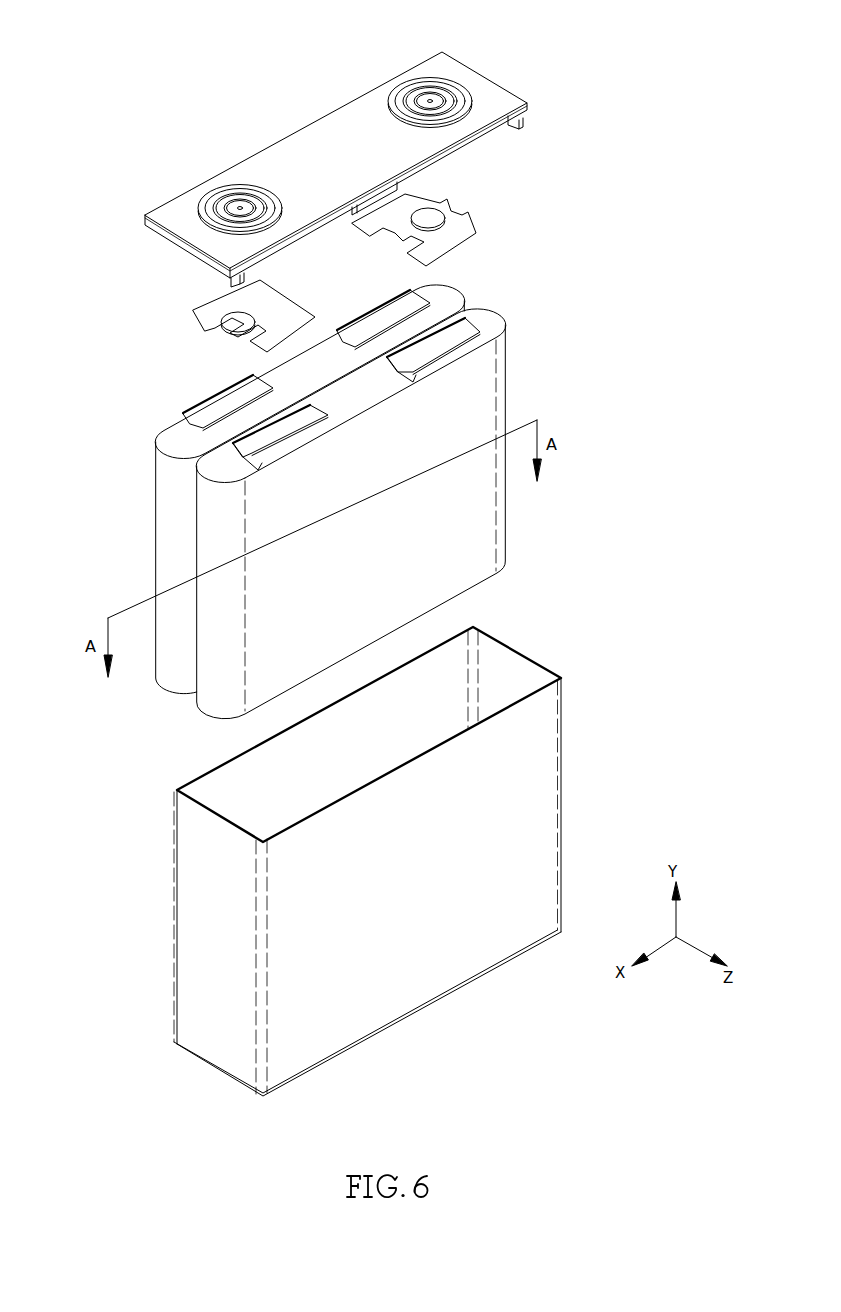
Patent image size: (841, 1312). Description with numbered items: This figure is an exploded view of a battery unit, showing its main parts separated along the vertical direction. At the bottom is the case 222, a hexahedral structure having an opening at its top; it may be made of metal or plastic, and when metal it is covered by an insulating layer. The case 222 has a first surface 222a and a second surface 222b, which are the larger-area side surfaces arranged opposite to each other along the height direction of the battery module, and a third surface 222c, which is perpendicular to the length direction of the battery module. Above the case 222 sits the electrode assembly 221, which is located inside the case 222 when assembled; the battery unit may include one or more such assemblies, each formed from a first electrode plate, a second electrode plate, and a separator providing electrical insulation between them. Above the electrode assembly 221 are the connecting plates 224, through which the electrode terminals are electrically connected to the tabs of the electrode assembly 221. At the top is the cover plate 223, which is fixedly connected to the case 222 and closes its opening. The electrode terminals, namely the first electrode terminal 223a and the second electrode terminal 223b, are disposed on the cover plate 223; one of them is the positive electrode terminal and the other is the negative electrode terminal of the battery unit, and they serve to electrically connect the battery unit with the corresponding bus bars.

The electrode assembly 221 is at (100, 545).
The case 222 is at (297, 871).
The first surface 222a is at (211, 783).
The second surface 222b is at (472, 963).
The third surface 222c is at (205, 1058).
The cover plate 223 is at (336, 156).
The first electrode terminal 223a is at (418, 86).
The second electrode terminal 223b is at (230, 187).
The connecting plate 224 is at (476, 232).